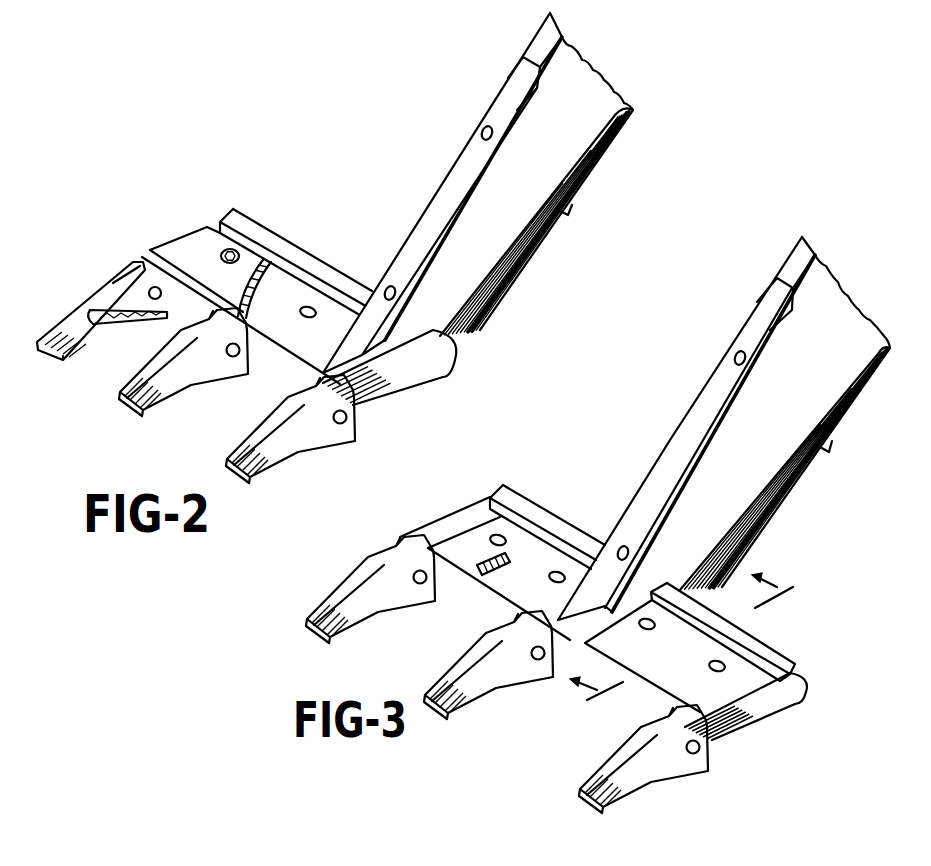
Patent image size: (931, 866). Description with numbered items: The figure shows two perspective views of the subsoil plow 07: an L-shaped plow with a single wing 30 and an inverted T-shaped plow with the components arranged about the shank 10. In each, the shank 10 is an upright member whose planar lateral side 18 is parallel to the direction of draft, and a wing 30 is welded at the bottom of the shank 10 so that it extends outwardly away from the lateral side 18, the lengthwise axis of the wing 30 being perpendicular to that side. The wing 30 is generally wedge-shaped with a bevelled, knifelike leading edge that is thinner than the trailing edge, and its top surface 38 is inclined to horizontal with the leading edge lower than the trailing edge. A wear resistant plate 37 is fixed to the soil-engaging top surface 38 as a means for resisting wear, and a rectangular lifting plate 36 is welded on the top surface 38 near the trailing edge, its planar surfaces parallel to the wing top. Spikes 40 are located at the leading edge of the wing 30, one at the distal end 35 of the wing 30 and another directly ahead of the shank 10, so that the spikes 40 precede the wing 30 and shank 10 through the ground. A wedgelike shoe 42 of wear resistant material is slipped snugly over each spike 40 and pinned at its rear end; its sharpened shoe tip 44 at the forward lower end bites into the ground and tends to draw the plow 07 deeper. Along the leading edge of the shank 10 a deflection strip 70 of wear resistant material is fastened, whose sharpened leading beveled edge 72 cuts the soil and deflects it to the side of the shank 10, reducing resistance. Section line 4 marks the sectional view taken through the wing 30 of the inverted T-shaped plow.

In FIG. 2, the subsoil plow 07 is at (603, 64).
In FIG. 3, the subsoil plow 07 is at (866, 287).
In FIG. 2, the shank 10 is at (585, 127).
In FIG. 3, the shank 10 is at (803, 414).
In FIG. 2, the lateral side of shank 18 is at (545, 197).
In FIG. 3, the wing 30 is at (683, 671).
In FIG. 2, the distal end of wing 35 is at (160, 247).
In FIG. 3, the distal end of wing 35 is at (455, 520).
In FIG. 2, the lifting plate 36 is at (273, 241).
In FIG. 3, the lifting plate 36 is at (553, 523).
In FIG. 2, the wear resistant plate 37 is at (187, 243).
In FIG. 2, the top surface of the wing 38 is at (294, 298).
In FIG. 3, the top surface of the wing 38 is at (527, 567).
In FIG. 2, the spike 40 is at (372, 408).
In FIG. 3, the spike 40 is at (727, 727).
In FIG. 2, the shoe 42 is at (93, 331).
In FIG. 3, the shoe 42 is at (463, 667).
In FIG. 2, the shoe tip 44 is at (133, 405).
In FIG. 3, the shoe tip 44 is at (308, 618).
In FIG. 3, the deflection strip 70 is at (706, 405).
In FIG. 3, the leading beveled edge 72 is at (668, 452).
In FIG. 3, the section line 4- 4 is at (688, 642).